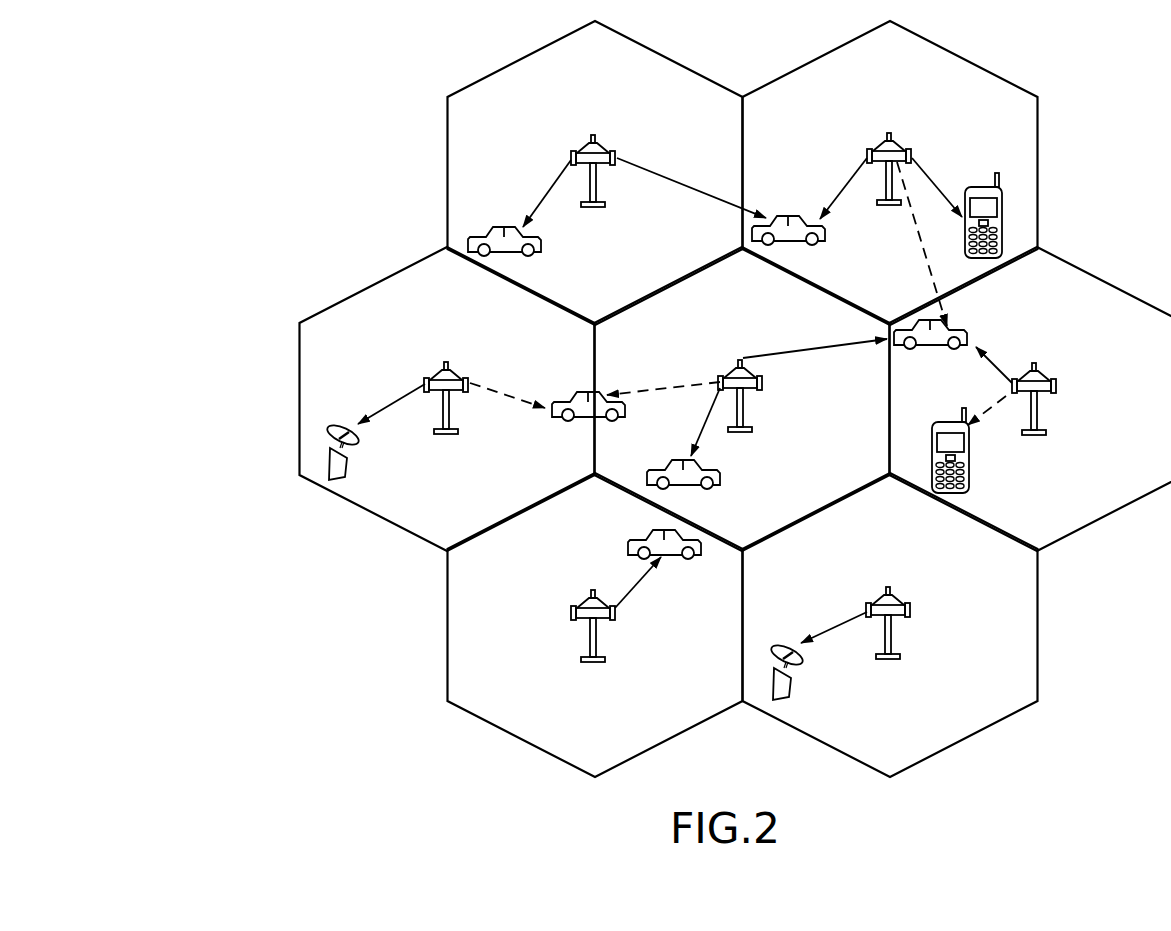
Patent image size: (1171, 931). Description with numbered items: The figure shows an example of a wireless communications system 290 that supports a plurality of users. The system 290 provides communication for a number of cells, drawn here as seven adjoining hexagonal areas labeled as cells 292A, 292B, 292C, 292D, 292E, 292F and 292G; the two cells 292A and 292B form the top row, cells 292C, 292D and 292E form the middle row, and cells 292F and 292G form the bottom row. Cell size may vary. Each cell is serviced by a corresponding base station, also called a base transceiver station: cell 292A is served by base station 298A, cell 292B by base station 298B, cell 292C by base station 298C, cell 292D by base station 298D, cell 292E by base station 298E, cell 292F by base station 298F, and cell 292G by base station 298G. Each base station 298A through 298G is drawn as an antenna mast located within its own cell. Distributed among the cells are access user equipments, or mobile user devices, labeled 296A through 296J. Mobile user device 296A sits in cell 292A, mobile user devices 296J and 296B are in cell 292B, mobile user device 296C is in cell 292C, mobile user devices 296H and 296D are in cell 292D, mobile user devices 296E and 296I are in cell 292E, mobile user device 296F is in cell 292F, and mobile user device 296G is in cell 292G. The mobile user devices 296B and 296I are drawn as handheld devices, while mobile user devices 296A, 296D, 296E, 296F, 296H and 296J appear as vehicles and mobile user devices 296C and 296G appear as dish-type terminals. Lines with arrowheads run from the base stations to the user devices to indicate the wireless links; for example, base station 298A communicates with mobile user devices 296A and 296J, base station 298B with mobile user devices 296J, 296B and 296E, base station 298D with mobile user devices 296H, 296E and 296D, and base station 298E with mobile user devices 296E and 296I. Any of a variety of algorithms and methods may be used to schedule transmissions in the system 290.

The wireless communications system 290 is at (226, 98).
The cell 292A is at (571, 64).
The cell 292B is at (866, 64).
The cell 292C is at (424, 305).
The cell 292D is at (717, 305).
The cell 292E is at (1012, 305).
The cell 292F is at (570, 525).
The cell 292G is at (866, 525).
The base station 298A is at (593, 135).
The base station 298B is at (889, 133).
The base station 298C is at (446, 362).
The base station 298D is at (740, 360).
The base station 298E is at (1034, 363).
The base station 298F is at (593, 590).
The base station 298G is at (888, 587).
The mobile user device 296A is at (541, 247).
The mobile user device 296B is at (981, 187).
The mobile user device 296C is at (347, 472).
The mobile user device 296D is at (721, 484).
The mobile user device 296E is at (930, 350).
The mobile user device 296F is at (700, 560).
The mobile user device 296G is at (791, 690).
The mobile user device 296H is at (556, 422).
The mobile user device 296I is at (968, 478).
The mobile user device 296J is at (790, 217).